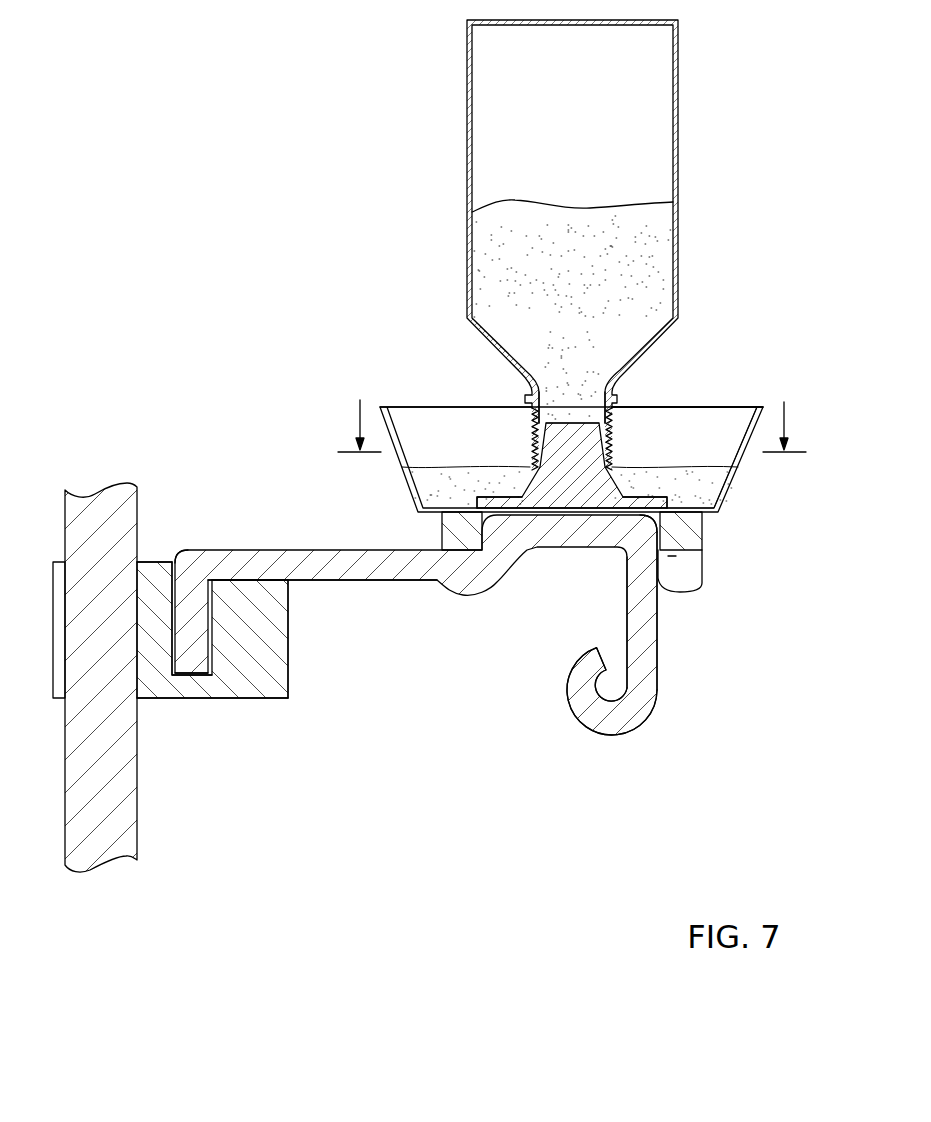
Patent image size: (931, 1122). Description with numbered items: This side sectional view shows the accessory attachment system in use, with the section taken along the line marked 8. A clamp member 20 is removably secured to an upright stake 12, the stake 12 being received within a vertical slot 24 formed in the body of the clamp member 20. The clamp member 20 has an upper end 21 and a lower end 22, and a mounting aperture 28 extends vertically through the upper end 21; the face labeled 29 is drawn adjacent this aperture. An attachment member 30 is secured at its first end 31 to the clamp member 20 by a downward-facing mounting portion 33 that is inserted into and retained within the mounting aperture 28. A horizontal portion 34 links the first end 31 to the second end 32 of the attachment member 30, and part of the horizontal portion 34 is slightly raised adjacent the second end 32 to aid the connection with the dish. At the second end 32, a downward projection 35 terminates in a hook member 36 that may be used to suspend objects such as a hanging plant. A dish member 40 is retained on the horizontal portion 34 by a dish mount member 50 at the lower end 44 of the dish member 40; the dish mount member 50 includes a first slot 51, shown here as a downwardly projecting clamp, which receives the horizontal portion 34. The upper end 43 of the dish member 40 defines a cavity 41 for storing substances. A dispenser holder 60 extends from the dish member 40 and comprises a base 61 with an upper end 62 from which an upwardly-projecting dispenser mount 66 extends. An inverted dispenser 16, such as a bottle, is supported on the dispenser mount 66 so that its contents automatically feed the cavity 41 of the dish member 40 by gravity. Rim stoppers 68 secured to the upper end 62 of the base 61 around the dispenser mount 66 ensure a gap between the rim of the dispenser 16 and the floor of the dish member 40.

The section line 8- 8 is at (572, 411).
The stake 12 is at (120, 838).
The dispenser 16 is at (467, 63).
The clamp member 20 is at (288, 673).
The upper end 21 is at (162, 561).
The lower end 22 is at (260, 699).
The vertical slot 24 is at (140, 647).
The mounting aperture 28 is at (212, 630).
The upper surface of block 29 is at (257, 582).
The attachment member 30 is at (340, 550).
The first end 31 is at (187, 550).
The second end 32 is at (640, 535).
The mounting portion 33 is at (190, 643).
The horizontal portion 34 is at (392, 582).
The downward projection 35 is at (657, 643).
The hook member 36 is at (605, 732).
The dish member 40 is at (404, 470).
The cavity 41 is at (663, 432).
The upper end 43 is at (727, 407).
The lower end 44 is at (703, 520).
The dish mount member 50 is at (663, 565).
The first slot 51 is at (447, 549).
The dispenser holder 60 is at (582, 437).
The base 61 is at (668, 506).
The upper end 62 is at (535, 478).
The dispenser mount 66 is at (573, 423).
The rim stoppers 68 is at (493, 497).